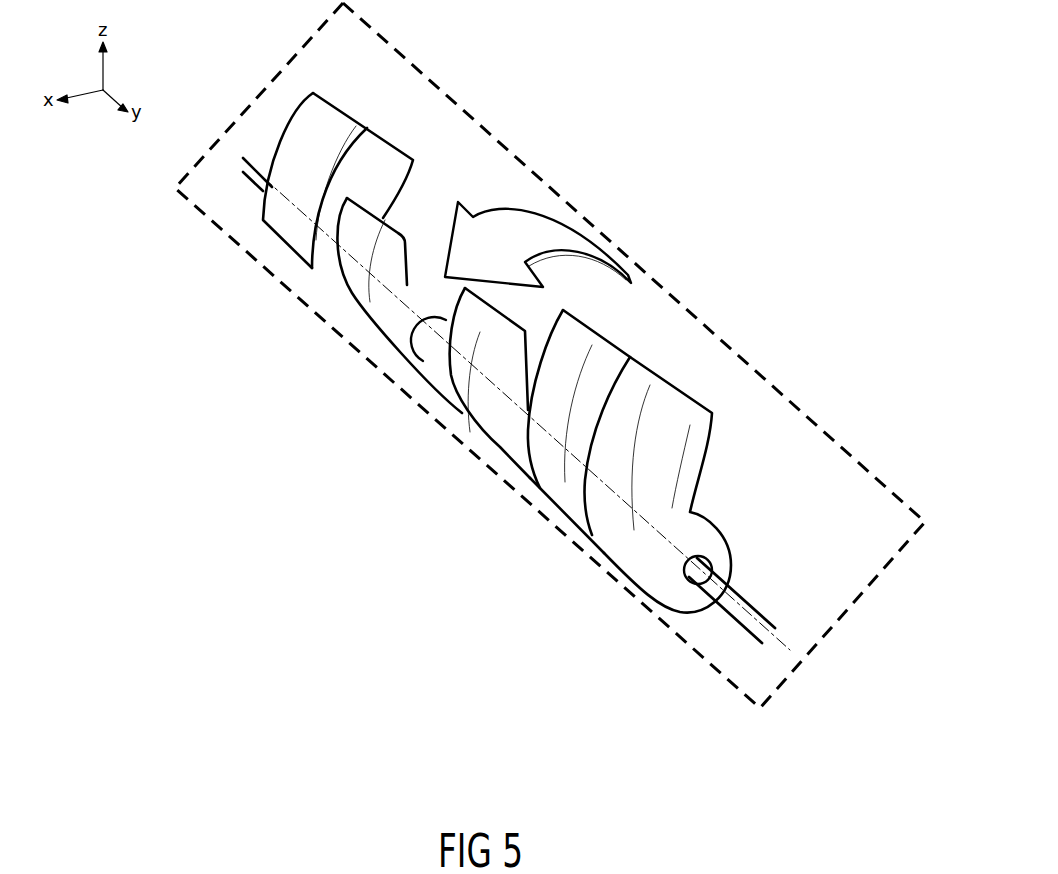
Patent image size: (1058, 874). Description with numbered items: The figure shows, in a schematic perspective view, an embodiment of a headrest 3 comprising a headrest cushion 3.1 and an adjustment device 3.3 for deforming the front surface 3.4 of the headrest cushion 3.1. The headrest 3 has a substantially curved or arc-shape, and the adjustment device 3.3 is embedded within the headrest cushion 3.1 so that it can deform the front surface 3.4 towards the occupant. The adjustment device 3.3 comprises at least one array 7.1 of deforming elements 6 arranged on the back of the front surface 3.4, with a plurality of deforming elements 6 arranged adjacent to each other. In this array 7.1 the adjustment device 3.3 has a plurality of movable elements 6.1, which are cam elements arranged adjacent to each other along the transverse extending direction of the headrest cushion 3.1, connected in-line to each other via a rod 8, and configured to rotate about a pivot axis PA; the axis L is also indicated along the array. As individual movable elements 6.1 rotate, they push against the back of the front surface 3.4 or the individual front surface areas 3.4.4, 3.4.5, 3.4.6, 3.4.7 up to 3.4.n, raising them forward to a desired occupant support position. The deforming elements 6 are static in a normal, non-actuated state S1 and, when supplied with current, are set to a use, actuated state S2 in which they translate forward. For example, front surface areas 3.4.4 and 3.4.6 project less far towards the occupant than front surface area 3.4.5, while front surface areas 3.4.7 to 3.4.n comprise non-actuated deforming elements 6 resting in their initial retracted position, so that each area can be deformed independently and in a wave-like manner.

The headrest 3 is at (503, 378).
The headrest cushion 3.1 is at (873, 470).
The adjustment device 3.3 is at (599, 419).
The front surface 3.4 is at (492, 378).
The front surface area 3.4.4 is at (480, 455).
The front surface area 3.4.5 is at (405, 385).
The front surface area 3.4.6 is at (343, 327).
The front surface area 3.4.7 is at (303, 275).
The front surface area 3.4.n is at (492, 378).
The deforming element 6 is at (299, 371).
The movable element 6.1 is at (299, 371).
The array 7.1 is at (745, 472).
The rod 8 is at (725, 613).
The longitudinal axis L is at (483, 442).
The pivot axis PA is at (773, 647).
The normal, non-actuated state S1 is at (587, 552).
The use, actuated state S2 is at (398, 436).